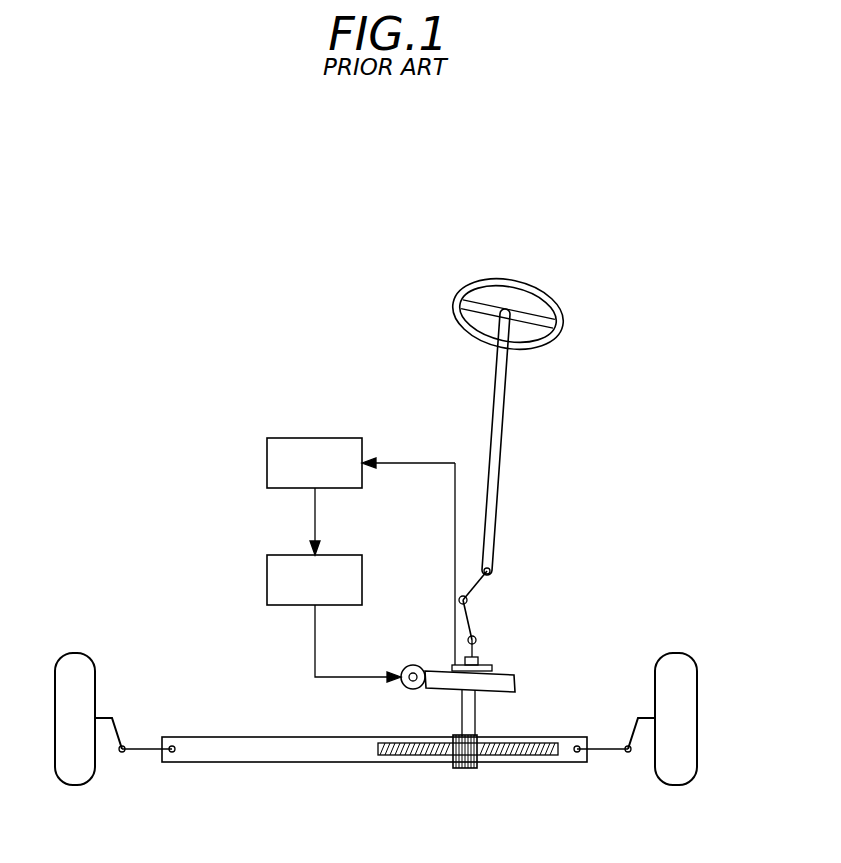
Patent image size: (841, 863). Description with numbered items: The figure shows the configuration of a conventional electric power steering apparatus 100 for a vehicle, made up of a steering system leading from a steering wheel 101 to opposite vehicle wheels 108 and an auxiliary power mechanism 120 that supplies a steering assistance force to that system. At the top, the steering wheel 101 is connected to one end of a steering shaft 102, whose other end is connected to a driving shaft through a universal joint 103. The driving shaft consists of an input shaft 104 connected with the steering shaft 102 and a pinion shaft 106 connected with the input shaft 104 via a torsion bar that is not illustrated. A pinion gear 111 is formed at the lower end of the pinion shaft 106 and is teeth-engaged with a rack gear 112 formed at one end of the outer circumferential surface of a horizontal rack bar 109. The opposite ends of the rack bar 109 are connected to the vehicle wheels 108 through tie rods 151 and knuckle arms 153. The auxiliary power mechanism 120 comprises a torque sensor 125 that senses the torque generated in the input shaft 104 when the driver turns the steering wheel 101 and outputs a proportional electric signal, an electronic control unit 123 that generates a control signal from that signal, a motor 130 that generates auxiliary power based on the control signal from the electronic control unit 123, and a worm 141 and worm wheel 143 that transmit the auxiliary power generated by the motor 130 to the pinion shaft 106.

The electric power steering apparatus 100 is at (194, 242).
The steering wheel 101 is at (449, 302).
The steering shaft 102 is at (505, 404).
The universal joint 103 is at (476, 591).
The input shaft 104 is at (478, 659).
The pinion shaft 106 is at (478, 718).
The vehicle wheels 108 is at (80, 662).
The rack bar 109 is at (278, 762).
The pinion gear 111 is at (460, 770).
The rack gear 112 is at (525, 760).
The auxiliary power mechanism 120 is at (238, 518).
The electronic control unit 123 is at (320, 437).
The torque sensor 125 is at (492, 670).
The motor 130 is at (267, 578).
The worm 141 is at (400, 667).
The worm wheel 143 is at (438, 671).
The tie rods 151 is at (142, 742).
The knuckle arms 153 is at (648, 715).